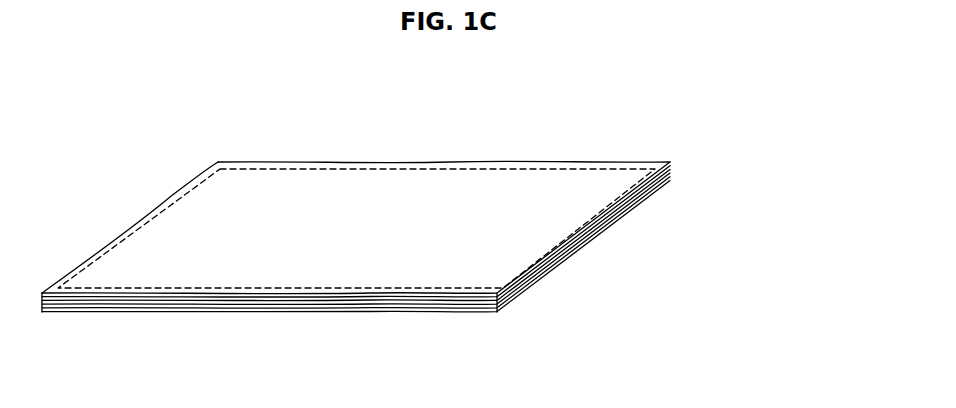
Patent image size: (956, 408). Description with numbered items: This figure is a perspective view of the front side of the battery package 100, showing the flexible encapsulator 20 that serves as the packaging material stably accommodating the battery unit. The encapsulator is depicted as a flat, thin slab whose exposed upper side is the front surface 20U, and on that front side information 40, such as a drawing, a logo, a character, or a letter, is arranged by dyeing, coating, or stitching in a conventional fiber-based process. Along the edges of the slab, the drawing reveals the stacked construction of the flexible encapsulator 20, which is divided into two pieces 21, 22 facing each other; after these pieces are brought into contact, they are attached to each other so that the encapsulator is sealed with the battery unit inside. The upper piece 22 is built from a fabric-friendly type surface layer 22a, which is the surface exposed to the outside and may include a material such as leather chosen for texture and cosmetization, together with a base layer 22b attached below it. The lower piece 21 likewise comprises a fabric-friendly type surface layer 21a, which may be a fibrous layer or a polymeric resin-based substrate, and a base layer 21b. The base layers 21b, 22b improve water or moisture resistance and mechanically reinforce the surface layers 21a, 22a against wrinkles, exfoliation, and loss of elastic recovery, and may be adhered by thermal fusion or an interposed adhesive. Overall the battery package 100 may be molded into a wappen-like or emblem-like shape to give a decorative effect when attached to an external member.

The battery package 100 is at (591, 138).
The flexible encapsulator 20 is at (805, 140).
The front surface 20U is at (215, 200).
The information 40 is at (328, 188).
The piece 22 is at (764, 125).
The fabric-friendly type surface layer 22a is at (673, 158).
The base layer 22b is at (673, 170).
The piece 21 is at (764, 225).
The base layer 21b is at (642, 199).
The fabric-friendly type surface layer 21a is at (603, 227).